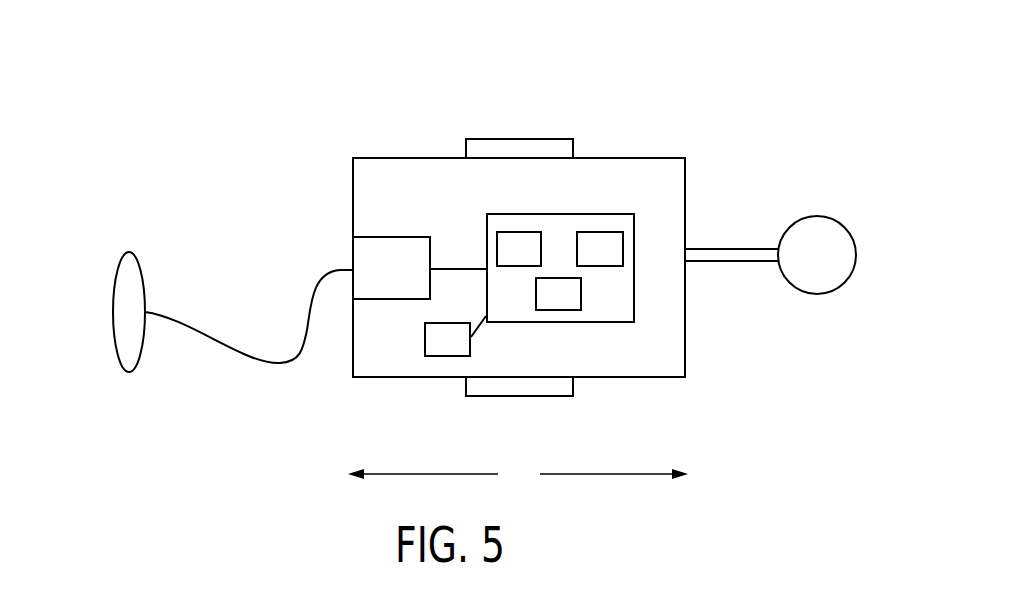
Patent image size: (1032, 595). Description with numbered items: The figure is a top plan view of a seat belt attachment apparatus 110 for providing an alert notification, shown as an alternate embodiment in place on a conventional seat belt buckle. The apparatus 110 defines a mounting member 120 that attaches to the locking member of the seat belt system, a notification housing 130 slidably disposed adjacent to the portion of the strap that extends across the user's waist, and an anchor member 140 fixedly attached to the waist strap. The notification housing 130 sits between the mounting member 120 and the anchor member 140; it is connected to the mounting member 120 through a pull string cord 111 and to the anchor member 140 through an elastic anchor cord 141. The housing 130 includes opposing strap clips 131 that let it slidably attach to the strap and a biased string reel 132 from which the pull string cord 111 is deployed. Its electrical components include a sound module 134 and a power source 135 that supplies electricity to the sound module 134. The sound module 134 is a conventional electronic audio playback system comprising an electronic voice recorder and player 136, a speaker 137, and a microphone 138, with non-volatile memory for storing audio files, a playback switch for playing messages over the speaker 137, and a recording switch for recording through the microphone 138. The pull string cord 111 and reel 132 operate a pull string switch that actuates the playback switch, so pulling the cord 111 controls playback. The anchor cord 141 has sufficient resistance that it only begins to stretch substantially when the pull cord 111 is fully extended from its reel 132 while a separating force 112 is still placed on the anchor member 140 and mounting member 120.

The seat belt attachment apparatus 110 is at (694, 102).
The pull string cord 111 is at (277, 364).
The separating force 112 is at (518, 475).
The mounting member 120 is at (113, 337).
The notification housing 130 is at (652, 362).
The strap clips 131 is at (531, 148).
The biased string reel 132 is at (377, 282).
The sound module 134 is at (560, 214).
The power source 135 is at (432, 350).
The electronic voice recorder and player 136 is at (505, 262).
The speaker 137 is at (586, 262).
The microphone 138 is at (544, 306).
The anchor member 140 is at (820, 294).
The elastic anchor cord 141 is at (750, 263).